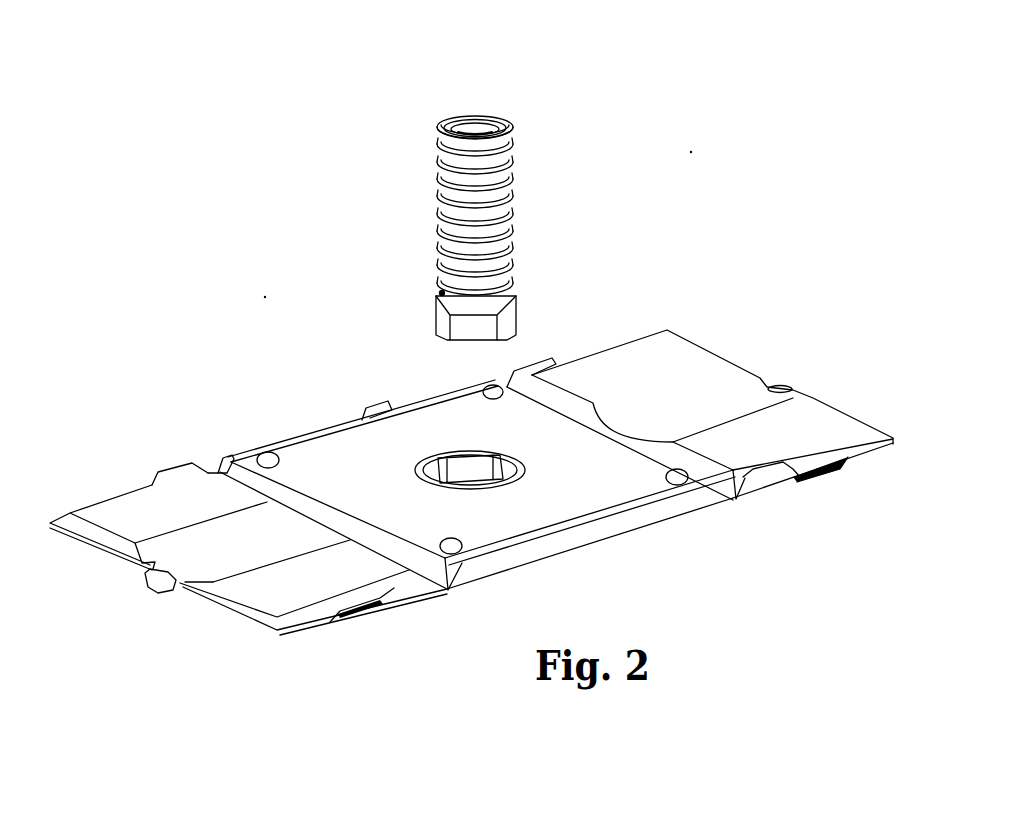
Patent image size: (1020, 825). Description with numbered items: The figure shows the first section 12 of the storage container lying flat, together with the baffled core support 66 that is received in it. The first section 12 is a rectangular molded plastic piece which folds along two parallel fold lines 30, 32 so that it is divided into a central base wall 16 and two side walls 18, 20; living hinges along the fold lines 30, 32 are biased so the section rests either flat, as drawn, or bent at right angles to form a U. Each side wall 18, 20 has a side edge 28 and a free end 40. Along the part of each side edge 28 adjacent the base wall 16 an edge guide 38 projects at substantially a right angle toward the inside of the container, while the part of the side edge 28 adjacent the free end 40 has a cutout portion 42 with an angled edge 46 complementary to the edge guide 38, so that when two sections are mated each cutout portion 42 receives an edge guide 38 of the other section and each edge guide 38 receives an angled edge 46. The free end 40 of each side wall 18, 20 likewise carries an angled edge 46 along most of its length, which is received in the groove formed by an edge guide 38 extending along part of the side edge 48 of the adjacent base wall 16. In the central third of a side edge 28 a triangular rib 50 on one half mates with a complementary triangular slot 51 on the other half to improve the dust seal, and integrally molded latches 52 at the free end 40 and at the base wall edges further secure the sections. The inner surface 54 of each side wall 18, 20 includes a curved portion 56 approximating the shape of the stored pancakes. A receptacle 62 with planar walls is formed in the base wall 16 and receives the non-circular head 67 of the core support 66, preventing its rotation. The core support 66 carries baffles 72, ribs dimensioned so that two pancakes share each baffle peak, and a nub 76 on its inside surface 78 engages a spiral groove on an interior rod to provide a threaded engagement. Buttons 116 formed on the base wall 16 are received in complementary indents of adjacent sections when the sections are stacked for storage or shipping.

The first section 12 is at (489, 470).
The central base wall 16 is at (477, 507).
The side wall 18 is at (270, 590).
The side wall 20 is at (827, 415).
The side edge 28 is at (137, 490).
The fold line 30 is at (456, 558).
The fold line 32 is at (738, 495).
The edge guide 38 is at (226, 458).
The free end 40 is at (86, 548).
The cutout portion 42 is at (853, 462).
The angled edge 46 is at (298, 613).
The side edge of base wall 48 is at (92, 494).
The triangular rib 50 is at (604, 575).
The triangular slot 51 is at (363, 612).
The latch 52 is at (152, 582).
The inner surface 54 is at (618, 362).
The curved portion 56 is at (200, 567).
The receptacle 62 is at (482, 458).
The baffled core support 66 is at (494, 212).
The head 67 is at (486, 328).
The baffle 72 is at (500, 170).
The nub 76 is at (441, 293).
The inside surface 78 is at (475, 122).
The button 116 is at (270, 455).